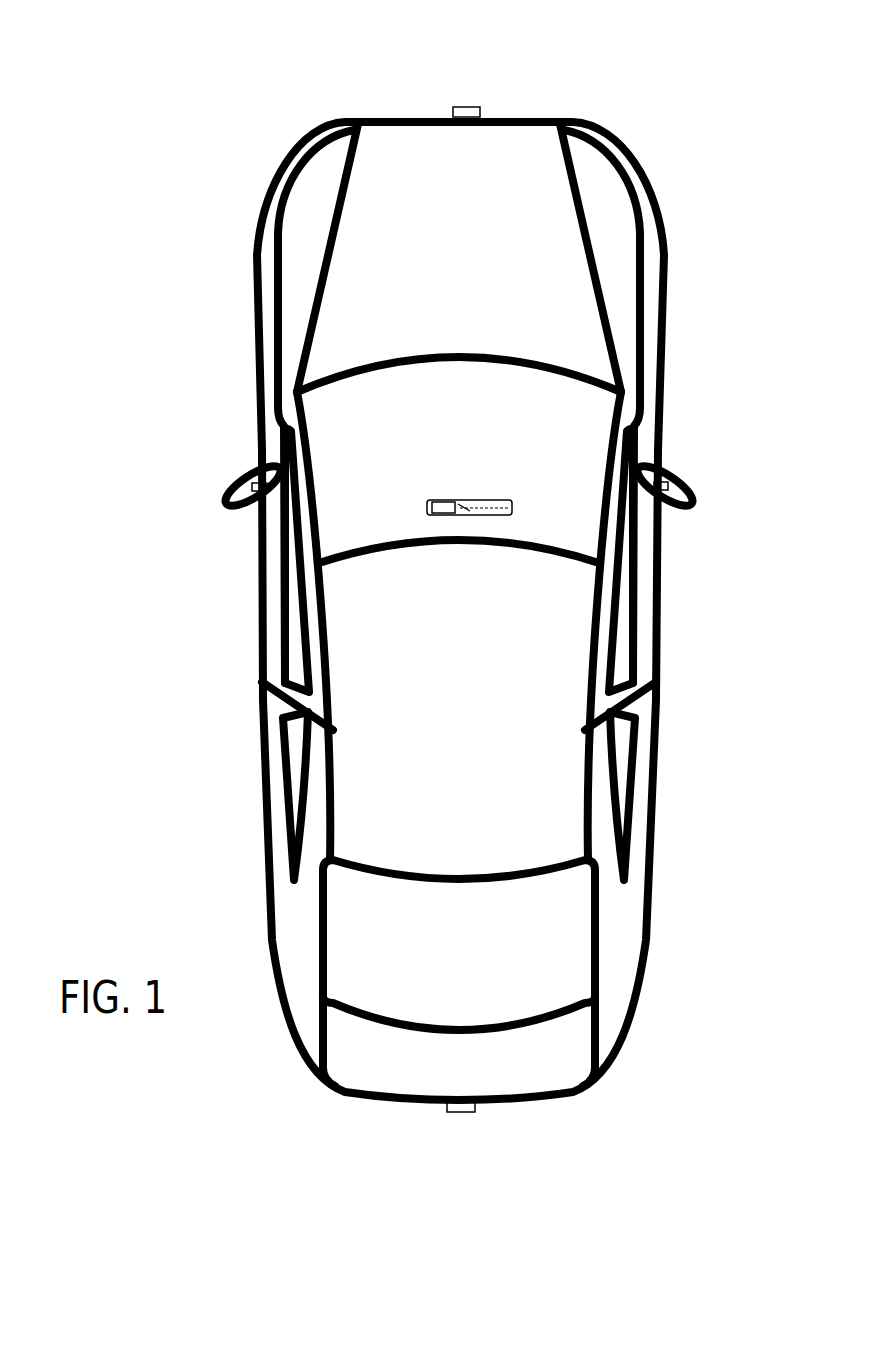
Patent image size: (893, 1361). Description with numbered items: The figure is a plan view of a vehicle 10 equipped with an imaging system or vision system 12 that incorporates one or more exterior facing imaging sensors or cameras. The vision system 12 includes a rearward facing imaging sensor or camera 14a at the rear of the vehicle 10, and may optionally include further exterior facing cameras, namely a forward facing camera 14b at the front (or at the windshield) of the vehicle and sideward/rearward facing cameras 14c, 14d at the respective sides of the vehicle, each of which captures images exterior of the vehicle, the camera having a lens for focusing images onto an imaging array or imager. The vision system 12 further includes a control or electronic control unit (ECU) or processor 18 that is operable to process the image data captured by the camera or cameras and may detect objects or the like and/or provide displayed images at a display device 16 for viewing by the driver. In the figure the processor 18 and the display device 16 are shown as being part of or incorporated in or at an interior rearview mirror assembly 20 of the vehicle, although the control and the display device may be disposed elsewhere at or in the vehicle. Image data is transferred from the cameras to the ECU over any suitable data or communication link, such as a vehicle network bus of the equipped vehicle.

The vehicle 10 is at (204, 208).
The vision system 12 is at (406, 1135).
The rearward facing camera 14a is at (465, 1110).
The forward facing camera 14b is at (468, 108).
The sideward/rearward facing camera 14c is at (240, 480).
The sideward/rearward facing camera 14d is at (672, 480).
The display device 16 is at (443, 502).
The electronic control unit 18 is at (467, 500).
The interior rearview mirror assembly 20 is at (513, 500).